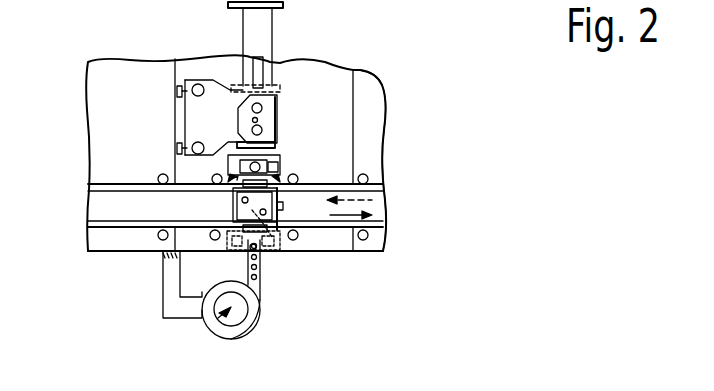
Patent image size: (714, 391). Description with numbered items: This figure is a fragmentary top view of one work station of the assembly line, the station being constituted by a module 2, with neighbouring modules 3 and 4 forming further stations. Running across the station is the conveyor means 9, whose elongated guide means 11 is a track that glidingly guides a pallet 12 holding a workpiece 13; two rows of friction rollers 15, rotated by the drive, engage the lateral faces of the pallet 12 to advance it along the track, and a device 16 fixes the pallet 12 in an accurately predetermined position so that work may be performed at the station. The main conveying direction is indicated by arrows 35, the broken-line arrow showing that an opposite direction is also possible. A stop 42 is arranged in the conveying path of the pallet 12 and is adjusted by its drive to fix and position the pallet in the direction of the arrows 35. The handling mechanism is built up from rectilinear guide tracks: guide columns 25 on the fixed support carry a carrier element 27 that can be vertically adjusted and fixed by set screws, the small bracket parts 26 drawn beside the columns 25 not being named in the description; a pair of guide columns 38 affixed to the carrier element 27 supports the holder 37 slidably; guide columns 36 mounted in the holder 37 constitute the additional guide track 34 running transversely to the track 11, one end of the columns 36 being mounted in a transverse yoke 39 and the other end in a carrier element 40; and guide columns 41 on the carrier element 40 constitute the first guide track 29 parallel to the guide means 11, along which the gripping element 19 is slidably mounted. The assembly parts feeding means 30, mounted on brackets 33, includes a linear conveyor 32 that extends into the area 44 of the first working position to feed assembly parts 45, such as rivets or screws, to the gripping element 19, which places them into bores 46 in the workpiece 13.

The module 2 is at (122, 46).
The module 3 is at (318, 80).
The module 4 is at (381, 82).
The conveyor means 9 is at (97, 217).
The elongated guide means 11 is at (117, 210).
The pallet 12 is at (233, 207).
The workpiece 13 is at (261, 268).
The friction rollers 15 is at (368, 180).
The device 16 is at (384, 211).
The gripping element 19 is at (228, 170).
The guide columns 25 is at (195, 84).
The roller bracket 26 is at (177, 92).
The carrier element 27 is at (198, 117).
The first guide track 29 is at (384, 201).
The assembly parts feeding means 30 is at (220, 327).
The linear conveyor 32 is at (262, 297).
The brackets 33 is at (454, 5).
The additional guide track 34 is at (277, 47).
The arrows 35 is at (283, 192).
The guide columns 36 is at (273, 10).
The holder 37 is at (283, 153).
The guide columns 38 is at (268, 133).
The transverse yoke 39 is at (248, 8).
The carrier element 40 is at (290, 165).
The guide columns 41 is at (295, 178).
The stop 42 is at (282, 203).
The area 44 is at (230, 259).
The assembly parts 45 is at (252, 258).
The bores 46 is at (240, 200).